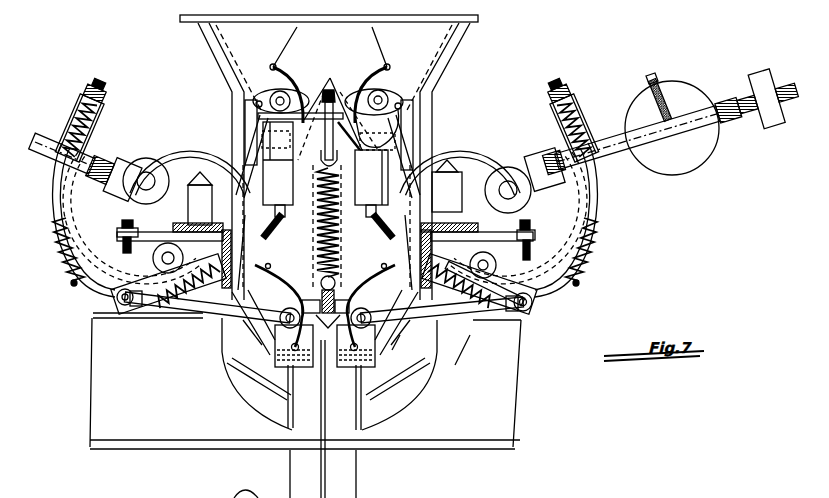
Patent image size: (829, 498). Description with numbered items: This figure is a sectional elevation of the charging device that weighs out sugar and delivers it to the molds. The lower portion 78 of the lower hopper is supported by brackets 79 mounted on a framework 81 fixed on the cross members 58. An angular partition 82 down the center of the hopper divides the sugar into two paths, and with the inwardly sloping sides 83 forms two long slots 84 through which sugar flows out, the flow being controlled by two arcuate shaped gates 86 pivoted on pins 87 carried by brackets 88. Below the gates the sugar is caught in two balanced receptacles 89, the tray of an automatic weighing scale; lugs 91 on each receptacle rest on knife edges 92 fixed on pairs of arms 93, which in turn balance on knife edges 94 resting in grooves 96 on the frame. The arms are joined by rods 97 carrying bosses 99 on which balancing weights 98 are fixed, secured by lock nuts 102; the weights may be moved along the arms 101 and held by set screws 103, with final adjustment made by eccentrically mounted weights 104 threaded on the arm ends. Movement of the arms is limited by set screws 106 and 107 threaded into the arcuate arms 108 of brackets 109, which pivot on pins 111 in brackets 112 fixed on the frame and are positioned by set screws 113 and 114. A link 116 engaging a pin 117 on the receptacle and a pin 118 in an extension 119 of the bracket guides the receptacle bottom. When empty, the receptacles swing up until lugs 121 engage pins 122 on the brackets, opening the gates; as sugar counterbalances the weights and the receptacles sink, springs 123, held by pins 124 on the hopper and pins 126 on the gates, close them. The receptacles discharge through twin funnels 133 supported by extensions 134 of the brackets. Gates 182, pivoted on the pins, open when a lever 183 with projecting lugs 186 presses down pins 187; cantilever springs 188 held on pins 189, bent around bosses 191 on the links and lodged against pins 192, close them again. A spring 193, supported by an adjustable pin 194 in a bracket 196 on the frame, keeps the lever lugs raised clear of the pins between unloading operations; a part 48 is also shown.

The conveyor 48 is at (235, 491).
The cross members 58 is at (152, 404).
The lower portion of the lower hopper 78 is at (479, 19).
The brackets 79 is at (201, 41).
The framework 81 is at (172, 236).
The angular partition 82 is at (331, 78).
The inwardly sloping sides 83 is at (228, 57).
The long slots 84 is at (385, 150).
The arcuate shaped gates 86 is at (258, 150).
The pins 87 is at (289, 95).
The brackets 88 is at (414, 113).
The balanced receptacles 89 is at (243, 321).
The lugs 91 is at (290, 178).
The knife edges 92 is at (306, 200).
The pairs of arms 93 is at (167, 151).
The knife edges 94 is at (200, 182).
The grooves 96 is at (190, 201).
The rods 97 is at (146, 175).
The balancing weights 98 is at (673, 84).
The bosses 99 is at (122, 193).
The arms 101 is at (39, 133).
The lock nuts 102 is at (112, 156).
The set screws 103 is at (649, 78).
The eccentrically mounted weights 104 is at (771, 125).
The set screw 106 is at (101, 79).
The set screw 107 is at (70, 284).
The arcuate arms 108 is at (50, 224).
The brackets 109 is at (112, 286).
The pins 111 is at (517, 318).
The brackets 112 is at (532, 246).
The set screw 113 is at (168, 310).
The set screw 114 is at (120, 222).
The link 116 is at (220, 308).
The pin 117 is at (287, 308).
The pin 118 is at (120, 307).
The extension 119 is at (125, 306).
The lugs 121 is at (246, 128).
The pins 122 is at (288, 92).
The springs 123 is at (281, 71).
The pins 124 is at (292, 44).
The pins 126 is at (352, 139).
The twin funnels 133 is at (300, 464).
The extensions 134 is at (247, 364).
The gates 182 is at (288, 386).
The lever 183 is at (337, 292).
The projecting lugs 186 is at (281, 279).
The pins 187 is at (325, 325).
The cantilever springs 188 is at (377, 278).
The pins 189 is at (296, 352).
The bosses 191 is at (403, 338).
The pins 192 is at (271, 263).
The spring 193 is at (337, 253).
The adjustable pin 194 is at (325, 132).
The bracket 196 is at (447, 161).